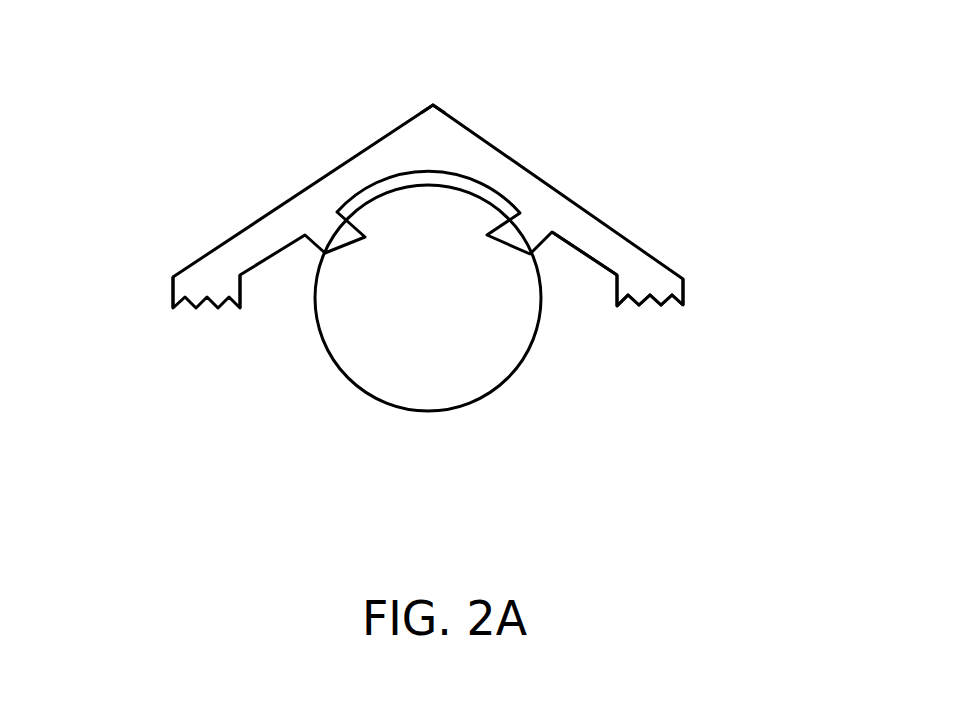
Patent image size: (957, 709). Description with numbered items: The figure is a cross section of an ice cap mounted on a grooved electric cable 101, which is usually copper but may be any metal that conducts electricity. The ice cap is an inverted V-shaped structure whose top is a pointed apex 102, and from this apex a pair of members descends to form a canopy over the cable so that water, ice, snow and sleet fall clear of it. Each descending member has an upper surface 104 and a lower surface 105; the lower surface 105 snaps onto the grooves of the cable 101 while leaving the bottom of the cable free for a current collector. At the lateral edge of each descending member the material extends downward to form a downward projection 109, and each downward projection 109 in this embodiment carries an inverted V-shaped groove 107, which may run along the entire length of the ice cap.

The grooved electric cable 101 is at (442, 297).
The pointed apex 102 is at (436, 104).
The upper surface 104 is at (568, 183).
The lower surface 105 is at (588, 275).
The inverted V-shaped groove 107 is at (665, 305).
The downward projection 109 is at (172, 285).